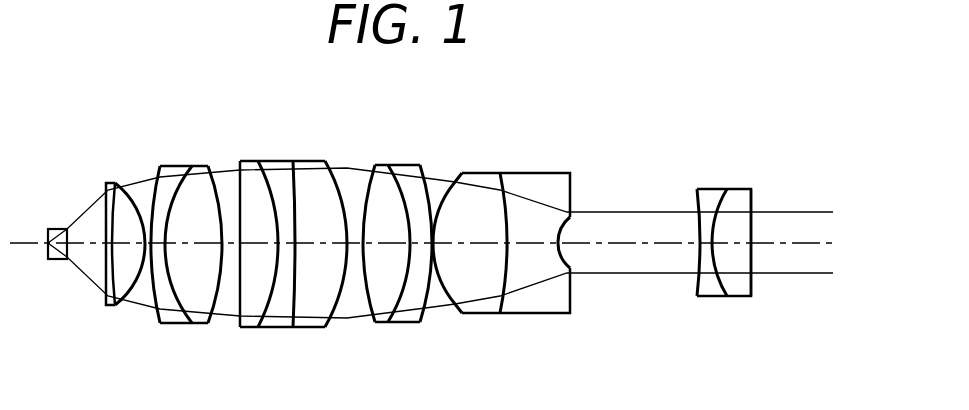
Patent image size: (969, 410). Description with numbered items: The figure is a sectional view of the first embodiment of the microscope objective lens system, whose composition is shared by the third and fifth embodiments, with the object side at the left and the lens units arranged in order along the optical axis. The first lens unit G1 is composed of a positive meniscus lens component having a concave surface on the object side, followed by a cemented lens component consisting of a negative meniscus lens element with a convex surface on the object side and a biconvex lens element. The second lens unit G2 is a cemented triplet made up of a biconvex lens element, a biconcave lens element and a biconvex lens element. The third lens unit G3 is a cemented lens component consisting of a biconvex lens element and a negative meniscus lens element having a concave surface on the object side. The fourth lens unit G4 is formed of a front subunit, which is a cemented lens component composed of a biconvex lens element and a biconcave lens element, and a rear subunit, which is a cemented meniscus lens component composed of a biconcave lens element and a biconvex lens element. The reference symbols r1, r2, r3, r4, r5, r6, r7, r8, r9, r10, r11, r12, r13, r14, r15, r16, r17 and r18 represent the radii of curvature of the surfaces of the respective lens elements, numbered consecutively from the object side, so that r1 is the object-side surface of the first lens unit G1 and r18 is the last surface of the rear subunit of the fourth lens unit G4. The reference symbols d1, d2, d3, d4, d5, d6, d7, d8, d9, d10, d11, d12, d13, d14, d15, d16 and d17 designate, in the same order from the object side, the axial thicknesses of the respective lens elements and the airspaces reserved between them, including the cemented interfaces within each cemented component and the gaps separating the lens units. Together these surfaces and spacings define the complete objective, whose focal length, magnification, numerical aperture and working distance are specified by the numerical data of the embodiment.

The first lens unit G1 is at (72, 108).
The second lens unit G2 is at (333, 108).
The third lens unit G3 is at (368, 108).
The fourth lens unit G4 is at (778, 108).
The radius of curvature of first surface r1 is at (112, 225).
The radius of curvature of second surface r2 is at (140, 215).
The radius of curvature of third surface r3 is at (152, 225).
The radius of curvature of fourth surface r4 is at (167, 225).
The radius of curvature of fifth surface r5 is at (221, 225).
The radius of curvature of sixth surface r6 is at (240, 168).
The radius of curvature of seventh surface r7 is at (268, 185).
The radius of curvature of eighth surface r8 is at (294, 178).
The radius of curvature of ninth surface r9 is at (333, 176).
The radius of curvature of tenth surface r10 is at (368, 190).
The radius of curvature of eleventh surface r11 is at (396, 180).
The radius of curvature of twelfth surface r12 is at (422, 172).
The radius of curvature of thirteenth surface r13 is at (449, 190).
The radius of curvature of fourteenth surface r14 is at (502, 178).
The radius of curvature of fifteenth surface r15 is at (562, 218).
The radius of curvature of sixteenth surface r16 is at (698, 207).
The radius of curvature of seventeenth surface r17 is at (725, 192).
The radius of curvature of eighteenth surface r18 is at (752, 205).
The first thickness d1 is at (105, 268).
The second thickness or airspace d2 is at (135, 302).
The third thickness or airspace d3 is at (163, 320).
The fourth thickness or airspace d4 is at (185, 310).
The fifth thickness or airspace d5 is at (224, 303).
The sixth thickness or airspace d6 is at (253, 306).
The seventh thickness or airspace d7 is at (283, 300).
The eighth thickness or airspace d8 is at (323, 305).
The ninth thickness or airspace d9 is at (348, 305).
The tenth thickness or airspace d10 is at (395, 300).
The eleventh thickness or airspace d11 is at (427, 295).
The twelfth thickness or airspace d12 is at (437, 295).
The thirteenth thickness or airspace d13 is at (500, 298).
The fourteenth thickness or airspace d14 is at (545, 298).
The fifteenth thickness or airspace d15 is at (647, 244).
The sixteenth thickness or airspace d16 is at (705, 244).
The seventeenth thickness or airspace d17 is at (727, 244).